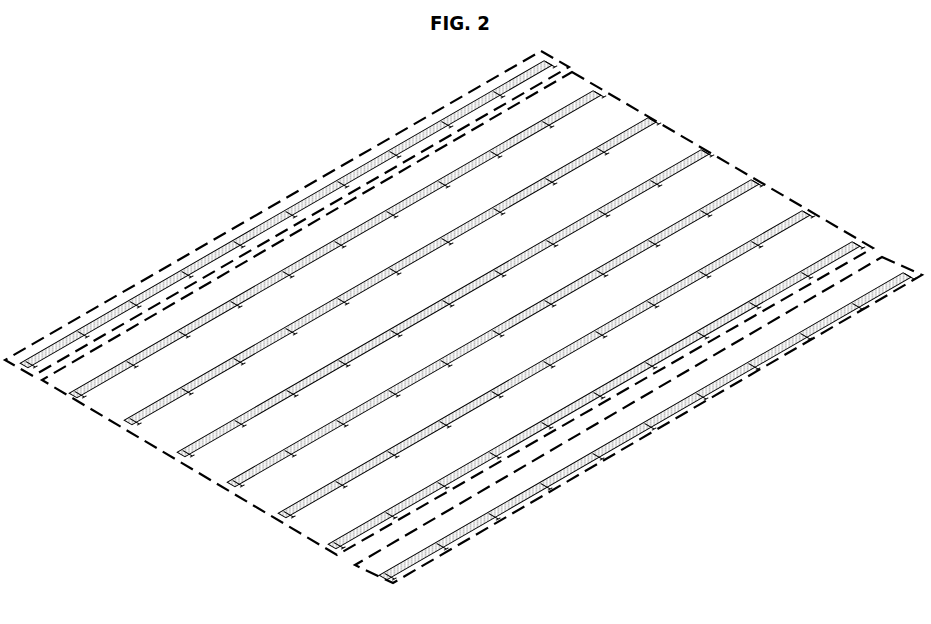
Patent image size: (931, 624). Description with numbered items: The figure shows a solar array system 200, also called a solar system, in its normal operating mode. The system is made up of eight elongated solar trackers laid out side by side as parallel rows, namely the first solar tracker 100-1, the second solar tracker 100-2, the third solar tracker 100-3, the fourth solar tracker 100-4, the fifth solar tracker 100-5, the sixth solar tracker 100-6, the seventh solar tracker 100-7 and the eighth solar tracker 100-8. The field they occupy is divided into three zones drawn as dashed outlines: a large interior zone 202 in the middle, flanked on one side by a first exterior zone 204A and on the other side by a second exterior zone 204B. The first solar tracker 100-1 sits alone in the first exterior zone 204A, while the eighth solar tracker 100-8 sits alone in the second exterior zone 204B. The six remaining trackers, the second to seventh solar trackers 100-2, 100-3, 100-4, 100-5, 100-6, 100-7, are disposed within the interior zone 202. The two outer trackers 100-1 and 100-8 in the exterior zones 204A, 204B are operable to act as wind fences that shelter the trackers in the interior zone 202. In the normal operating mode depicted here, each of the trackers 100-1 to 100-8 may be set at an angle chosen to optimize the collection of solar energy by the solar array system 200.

The solar array system 200 is at (191, 113).
The interior zone 202 is at (153, 448).
The first exterior zone 204A is at (283, 210).
The second exterior zone 204B is at (658, 427).
The first solar tracker 100-1 is at (556, 60).
The second solar tracker 100-2 is at (601, 92).
The third solar tracker 100-3 is at (654, 122).
The fourth solar tracker 100-4 is at (706, 153).
The fifth solar tracker 100-5 is at (757, 182).
The sixth solar tracker 100-6 is at (276, 517).
The seventh solar tracker 100-7 is at (330, 548).
The eighth solar tracker 100-8 is at (385, 580).